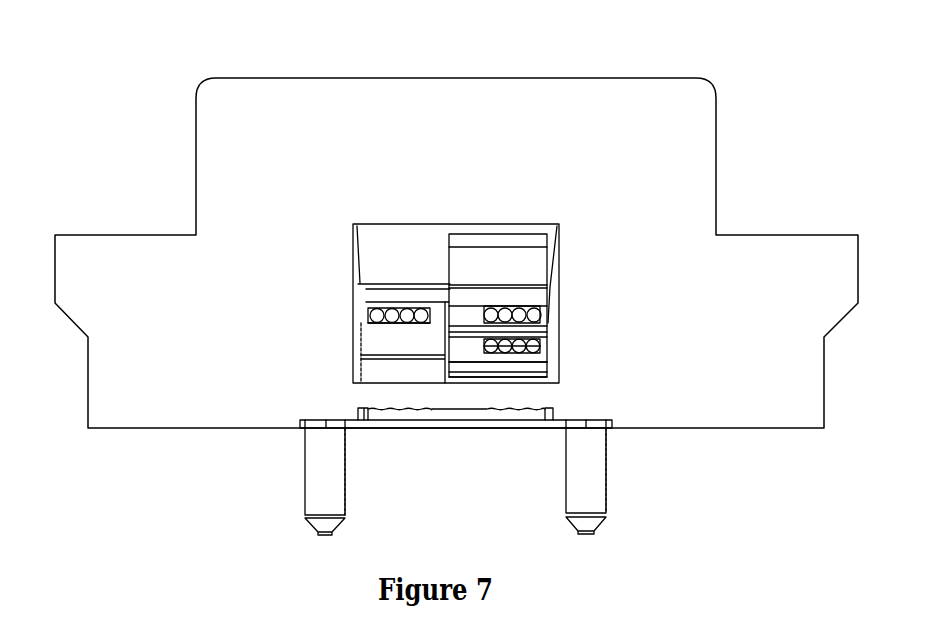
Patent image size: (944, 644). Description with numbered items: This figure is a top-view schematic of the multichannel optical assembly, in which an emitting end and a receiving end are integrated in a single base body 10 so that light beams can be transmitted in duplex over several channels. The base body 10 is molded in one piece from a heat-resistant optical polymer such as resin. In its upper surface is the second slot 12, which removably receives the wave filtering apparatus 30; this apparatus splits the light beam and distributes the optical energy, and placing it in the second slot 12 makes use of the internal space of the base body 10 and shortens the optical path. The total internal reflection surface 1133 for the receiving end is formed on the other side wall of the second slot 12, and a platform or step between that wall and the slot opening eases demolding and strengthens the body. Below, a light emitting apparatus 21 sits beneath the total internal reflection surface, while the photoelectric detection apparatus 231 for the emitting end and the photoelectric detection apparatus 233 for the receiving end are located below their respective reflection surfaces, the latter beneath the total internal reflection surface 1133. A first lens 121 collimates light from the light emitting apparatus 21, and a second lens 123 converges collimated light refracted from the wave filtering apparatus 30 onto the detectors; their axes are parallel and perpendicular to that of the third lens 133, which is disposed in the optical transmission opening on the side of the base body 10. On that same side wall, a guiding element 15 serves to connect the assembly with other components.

The base body 10 is at (806, 382).
The second slot 12 is at (358, 298).
The guiding element 15 is at (313, 492).
The light emitting apparatus 21 is at (482, 356).
The wave filtering apparatus 30 is at (483, 257).
The first lens 121 is at (510, 345).
The second lens 123 is at (377, 318).
The third lens 133 is at (380, 409).
The total internal reflection surface for the receiving end 1133 is at (413, 342).
The photoelectric detection apparatus for the emitting end 231 is at (537, 323).
The photoelectric detection apparatus for the receiving end 233 is at (385, 322).